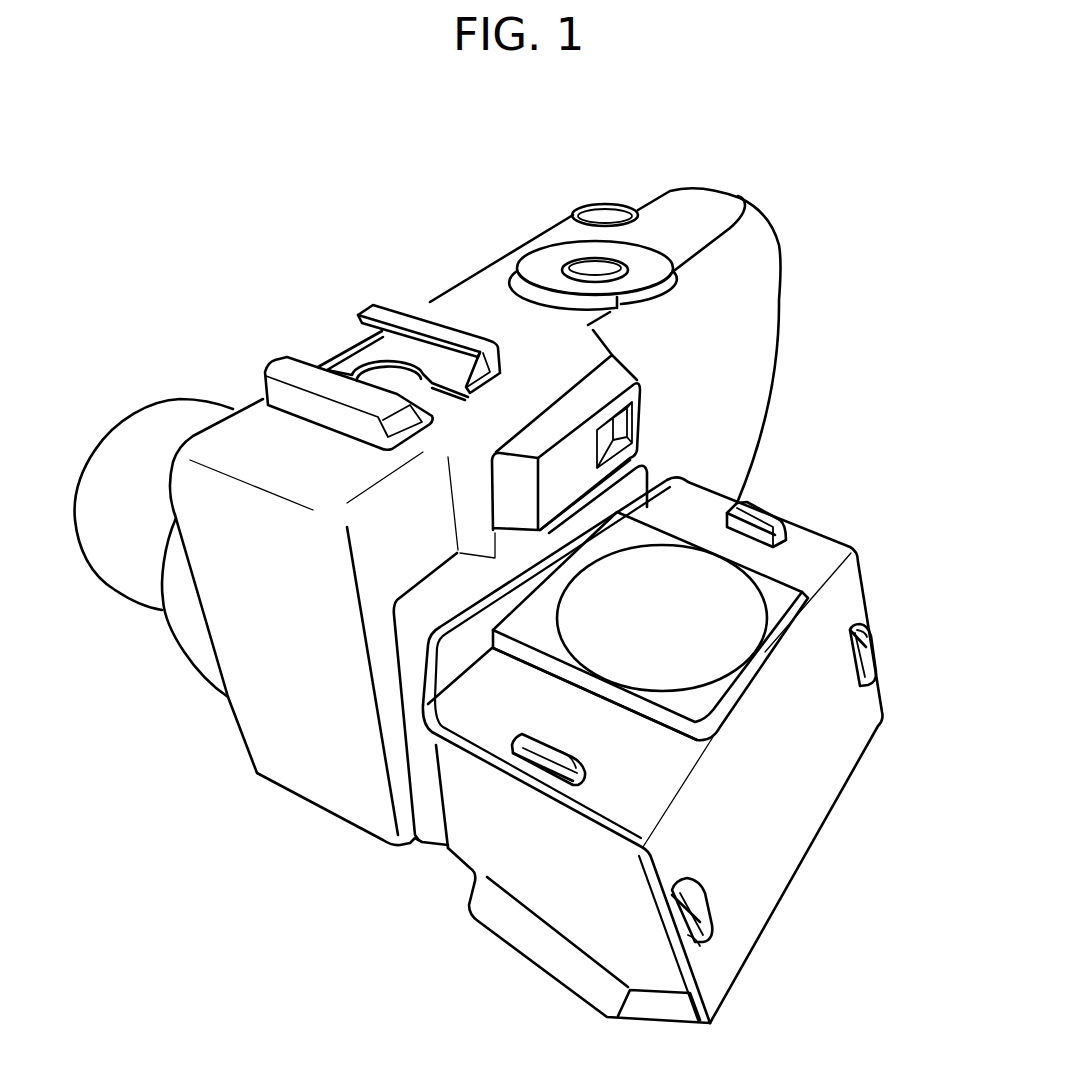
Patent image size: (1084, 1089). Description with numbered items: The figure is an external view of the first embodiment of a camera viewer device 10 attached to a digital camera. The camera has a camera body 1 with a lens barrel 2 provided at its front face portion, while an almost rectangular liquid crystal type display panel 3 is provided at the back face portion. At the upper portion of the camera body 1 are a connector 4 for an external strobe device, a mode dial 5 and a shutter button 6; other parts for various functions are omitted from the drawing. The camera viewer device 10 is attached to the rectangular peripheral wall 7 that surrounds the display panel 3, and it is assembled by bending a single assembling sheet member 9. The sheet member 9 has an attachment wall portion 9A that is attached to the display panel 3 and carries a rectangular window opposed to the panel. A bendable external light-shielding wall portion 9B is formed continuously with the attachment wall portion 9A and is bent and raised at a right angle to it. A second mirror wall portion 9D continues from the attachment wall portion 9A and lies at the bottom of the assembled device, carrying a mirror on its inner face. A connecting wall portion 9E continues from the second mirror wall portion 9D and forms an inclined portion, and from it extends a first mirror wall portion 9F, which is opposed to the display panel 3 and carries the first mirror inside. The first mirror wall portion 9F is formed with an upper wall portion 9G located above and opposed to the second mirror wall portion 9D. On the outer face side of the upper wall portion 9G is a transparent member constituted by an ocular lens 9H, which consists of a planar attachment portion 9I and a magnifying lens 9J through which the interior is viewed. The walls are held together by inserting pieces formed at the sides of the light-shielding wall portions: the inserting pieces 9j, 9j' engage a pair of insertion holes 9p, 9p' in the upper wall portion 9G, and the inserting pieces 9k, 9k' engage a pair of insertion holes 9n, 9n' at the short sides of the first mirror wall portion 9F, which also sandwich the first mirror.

The camera body 1 is at (448, 312).
The lens barrel 2 is at (157, 406).
The liquid crystal type display panel 3 is at (424, 593).
The connector for an external strobe device 4 is at (278, 366).
The mode dial 5 is at (568, 252).
The shutter button 6 is at (590, 212).
The rectangular peripheral wall 7 is at (407, 713).
The assembling sheet member 9 is at (796, 828).
The attachment wall portion 9A is at (643, 480).
The external light-shielding wall portion 9B is at (567, 925).
The second mirror wall portion 9D is at (507, 925).
The connecting wall portion 9E is at (653, 1010).
The first mirror wall portion 9F is at (840, 773).
The upper wall portion 9G is at (833, 543).
The ocular lens 9H is at (783, 598).
The planar attachment portion 9I is at (713, 712).
The magnifying lens 9J is at (748, 648).
The inserting piece 9j is at (548, 737).
The insertion hole 9p is at (556, 748).
The inserting piece 9j' is at (756, 505).
The insertion hole 9p' is at (782, 511).
The inserting piece 9k is at (719, 906).
The insertion hole 9n is at (714, 914).
The inserting piece 9k' is at (899, 659).
The insertion hole 9n' is at (890, 637).
The camera viewer device 10 is at (817, 476).